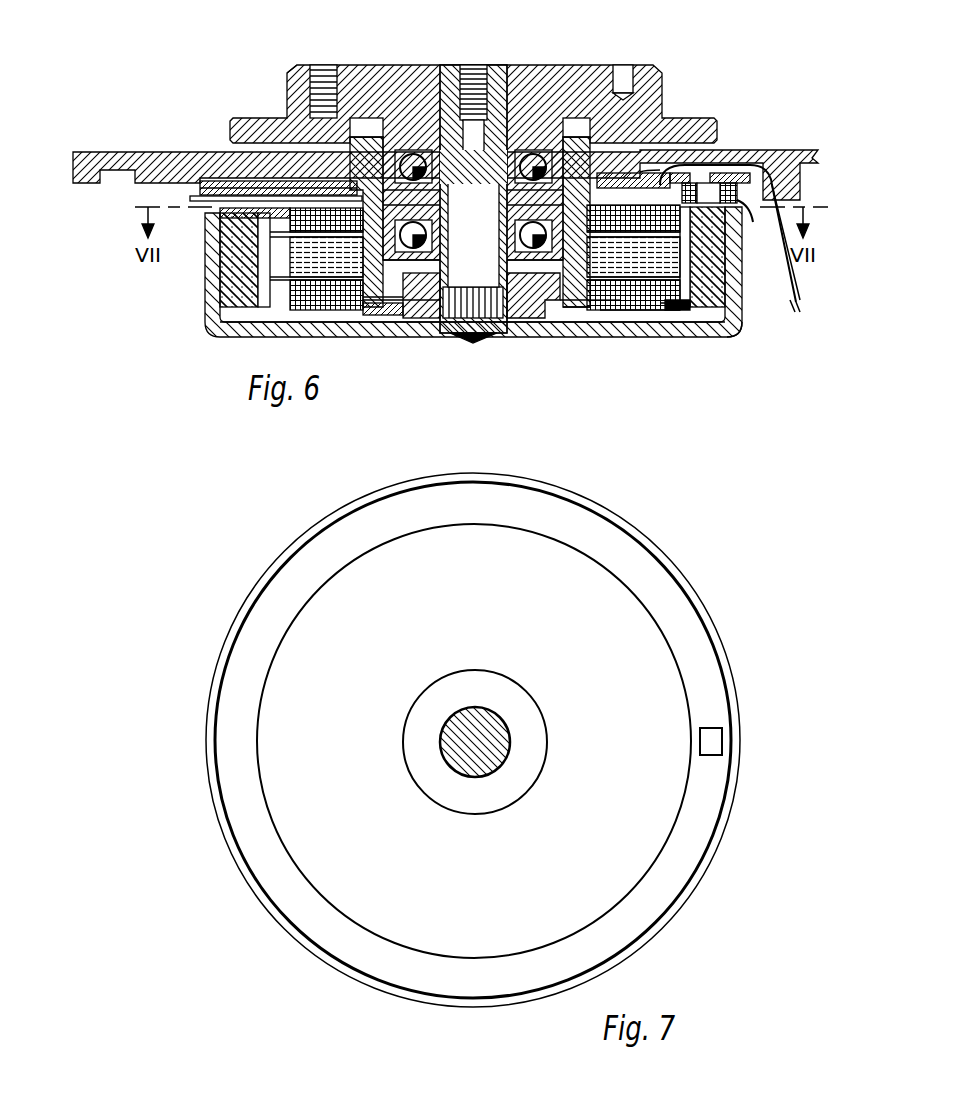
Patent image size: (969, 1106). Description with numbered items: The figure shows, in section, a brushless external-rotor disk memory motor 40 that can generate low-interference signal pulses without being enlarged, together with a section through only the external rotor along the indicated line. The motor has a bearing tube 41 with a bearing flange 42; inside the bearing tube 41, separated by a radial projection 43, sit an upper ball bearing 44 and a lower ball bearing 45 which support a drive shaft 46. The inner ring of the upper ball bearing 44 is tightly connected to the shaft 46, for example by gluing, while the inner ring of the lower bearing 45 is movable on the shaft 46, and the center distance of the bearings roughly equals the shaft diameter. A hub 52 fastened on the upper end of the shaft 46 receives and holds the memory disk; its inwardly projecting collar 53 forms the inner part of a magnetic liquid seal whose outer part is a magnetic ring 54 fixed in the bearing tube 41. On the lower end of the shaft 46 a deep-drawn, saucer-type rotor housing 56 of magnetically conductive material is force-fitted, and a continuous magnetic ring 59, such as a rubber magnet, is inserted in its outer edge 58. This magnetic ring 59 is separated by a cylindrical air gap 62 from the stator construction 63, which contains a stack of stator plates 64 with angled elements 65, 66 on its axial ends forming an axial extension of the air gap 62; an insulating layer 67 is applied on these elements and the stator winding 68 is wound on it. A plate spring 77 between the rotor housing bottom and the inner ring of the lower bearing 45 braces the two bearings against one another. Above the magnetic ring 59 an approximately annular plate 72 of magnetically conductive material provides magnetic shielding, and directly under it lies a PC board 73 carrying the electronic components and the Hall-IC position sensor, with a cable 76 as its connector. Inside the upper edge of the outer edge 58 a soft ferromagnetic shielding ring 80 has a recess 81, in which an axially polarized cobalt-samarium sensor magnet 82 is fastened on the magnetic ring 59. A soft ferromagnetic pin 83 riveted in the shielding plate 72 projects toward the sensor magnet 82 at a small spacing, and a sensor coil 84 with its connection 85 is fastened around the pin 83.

In FIG. 6, the disk memory motor 40 is at (243, 62).
In FIG. 6, the bearing tube 41 is at (377, 297).
In FIG. 6, the bearing flange 42 is at (177, 160).
In FIG. 6, the radial projection 43 is at (503, 200).
In FIG. 6, the upper ball bearing 44 is at (537, 158).
In FIG. 6, the lower ball bearing 45 is at (403, 307).
In FIG. 6, the drive shaft 46 is at (497, 73).
In FIG. 7, the drive shaft 46 is at (497, 733).
In FIG. 6, the hub 52 is at (573, 77).
In FIG. 6, the collar 53 is at (430, 97).
In FIG. 6, the magnetic ring 54 is at (393, 110).
In FIG. 6, the rotor housing 56 is at (627, 318).
In FIG. 6, the outer edge 58 is at (730, 292).
In FIG. 7, the outer edge 58 is at (272, 583).
In FIG. 6, the magnetic ring 59 is at (725, 317).
In FIG. 6, the air gap 62 is at (680, 303).
In FIG. 6, the stator construction 63 is at (663, 303).
In FIG. 6, the stack of stator plates 64 is at (647, 264).
In FIG. 6, the angled element 65 is at (223, 228).
In FIG. 6, the angled element 66 is at (223, 290).
In FIG. 6, the insulating layer 67 is at (580, 300).
In FIG. 6, the stator winding 68 is at (610, 300).
In FIG. 6, the annular plate 72 is at (207, 187).
In FIG. 6, the PC board 73 is at (240, 193).
In FIG. 6, the cable 76 is at (793, 297).
In FIG. 6, the plate spring 77 is at (422, 300).
In FIG. 6, the shielding ring 80 is at (223, 225).
In FIG. 7, the shielding ring 80 is at (712, 787).
In FIG. 7, the recess 81 is at (702, 728).
In FIG. 6, the sensor magnet 82 is at (720, 262).
In FIG. 7, the sensor magnet 82 is at (702, 747).
In FIG. 6, the pin 83 is at (713, 183).
In FIG. 6, the sensor coil 84 is at (733, 187).
In FIG. 6, the connection 85 is at (753, 222).